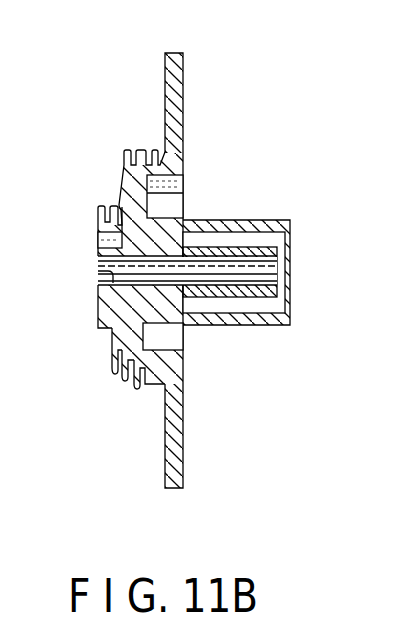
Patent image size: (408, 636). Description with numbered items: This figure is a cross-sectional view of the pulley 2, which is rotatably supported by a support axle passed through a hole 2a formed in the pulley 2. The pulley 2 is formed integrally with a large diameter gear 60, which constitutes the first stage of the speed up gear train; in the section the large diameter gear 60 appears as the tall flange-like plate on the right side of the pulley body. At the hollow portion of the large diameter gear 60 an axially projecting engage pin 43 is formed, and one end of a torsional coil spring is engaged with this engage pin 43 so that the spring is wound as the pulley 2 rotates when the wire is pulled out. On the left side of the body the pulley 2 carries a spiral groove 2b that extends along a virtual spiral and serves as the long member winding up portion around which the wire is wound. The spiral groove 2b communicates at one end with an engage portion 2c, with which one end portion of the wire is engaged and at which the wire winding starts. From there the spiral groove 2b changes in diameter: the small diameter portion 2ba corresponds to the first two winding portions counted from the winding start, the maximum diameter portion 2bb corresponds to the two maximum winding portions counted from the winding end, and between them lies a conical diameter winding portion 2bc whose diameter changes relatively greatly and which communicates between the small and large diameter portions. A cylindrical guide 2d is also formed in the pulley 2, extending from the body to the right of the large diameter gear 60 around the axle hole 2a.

The pulley 2 is at (137, 101).
The large diameter gear 60 is at (186, 55).
The engage portion 2c is at (93, 227).
The engage pin 43 is at (175, 183).
The hole 2a is at (107, 277).
The small diameter portion 2ba is at (116, 338).
The cylindrical guide 2d is at (233, 326).
The conical diameter winding portion 2bc is at (125, 387).
The maximum diameter portion 2bb is at (138, 392).
The spiral groove 2b is at (87, 428).